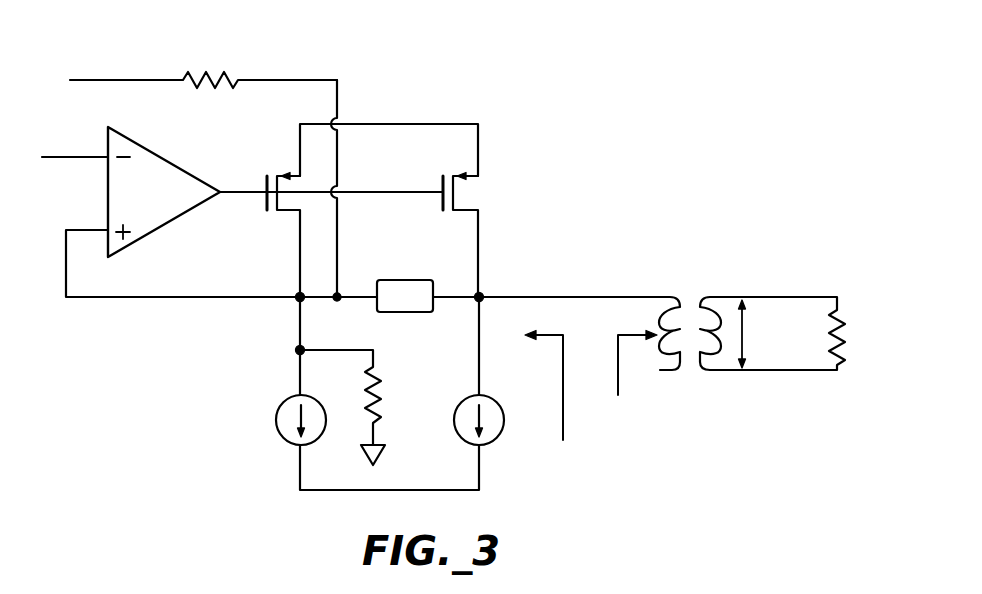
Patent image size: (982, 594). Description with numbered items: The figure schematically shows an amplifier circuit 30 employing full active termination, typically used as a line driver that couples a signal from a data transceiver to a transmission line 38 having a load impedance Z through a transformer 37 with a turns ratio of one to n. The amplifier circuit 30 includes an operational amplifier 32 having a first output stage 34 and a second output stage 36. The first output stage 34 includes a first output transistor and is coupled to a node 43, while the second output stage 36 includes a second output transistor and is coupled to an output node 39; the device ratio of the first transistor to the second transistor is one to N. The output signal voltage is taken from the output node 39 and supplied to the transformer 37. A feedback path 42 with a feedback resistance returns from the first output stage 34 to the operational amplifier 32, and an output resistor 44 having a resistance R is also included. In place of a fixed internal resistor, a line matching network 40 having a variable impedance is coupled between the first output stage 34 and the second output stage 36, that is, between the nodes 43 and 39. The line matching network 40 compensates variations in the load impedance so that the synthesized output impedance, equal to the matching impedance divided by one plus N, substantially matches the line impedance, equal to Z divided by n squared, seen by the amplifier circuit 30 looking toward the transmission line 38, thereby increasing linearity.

The amplifier circuit 30 is at (448, 45).
The operational amplifier 32 is at (153, 150).
The first output stage 34 is at (279, 227).
The second output stage 36 is at (446, 227).
The transformer 37 is at (700, 260).
The transmission line 38 is at (792, 278).
The output node 39 is at (483, 294).
The line matching network 40 is at (393, 313).
The feedback path 42 is at (265, 79).
The node 43 is at (297, 300).
The output resistor 44 is at (378, 410).